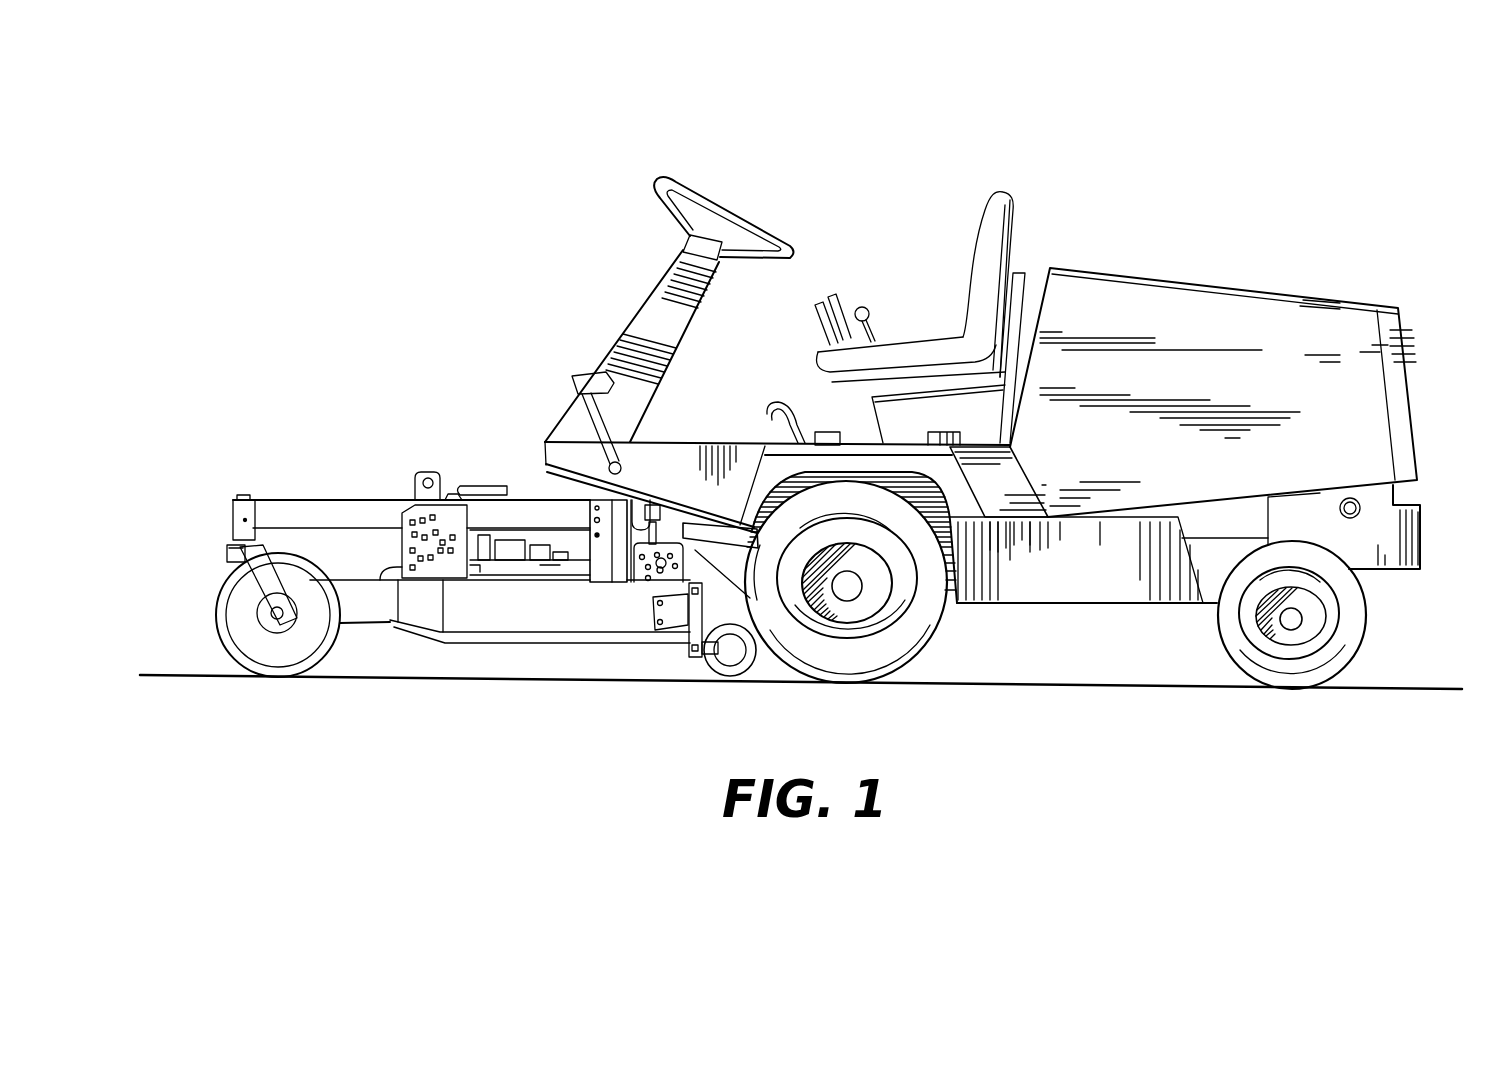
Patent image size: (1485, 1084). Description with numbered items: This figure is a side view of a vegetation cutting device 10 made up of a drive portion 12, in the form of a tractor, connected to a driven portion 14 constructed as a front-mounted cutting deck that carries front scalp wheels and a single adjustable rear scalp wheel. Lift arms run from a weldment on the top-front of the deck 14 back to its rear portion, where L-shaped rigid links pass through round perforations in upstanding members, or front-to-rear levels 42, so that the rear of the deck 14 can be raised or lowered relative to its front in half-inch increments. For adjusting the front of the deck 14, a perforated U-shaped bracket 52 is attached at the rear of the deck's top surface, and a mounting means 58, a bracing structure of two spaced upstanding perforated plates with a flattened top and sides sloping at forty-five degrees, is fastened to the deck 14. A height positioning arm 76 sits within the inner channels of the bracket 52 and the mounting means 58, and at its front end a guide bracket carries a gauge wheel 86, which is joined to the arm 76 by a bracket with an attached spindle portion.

The vegetation cutting device 10 is at (538, 172).
The drive portion 12 is at (1155, 141).
The driven portion 14 is at (395, 442).
The front-to-rear levels 42 is at (673, 578).
The U-shaped bracket 52 is at (607, 568).
The mounting means 58 is at (455, 465).
The height positioning arm 76 is at (343, 501).
The gauge wheel 86 is at (218, 610).